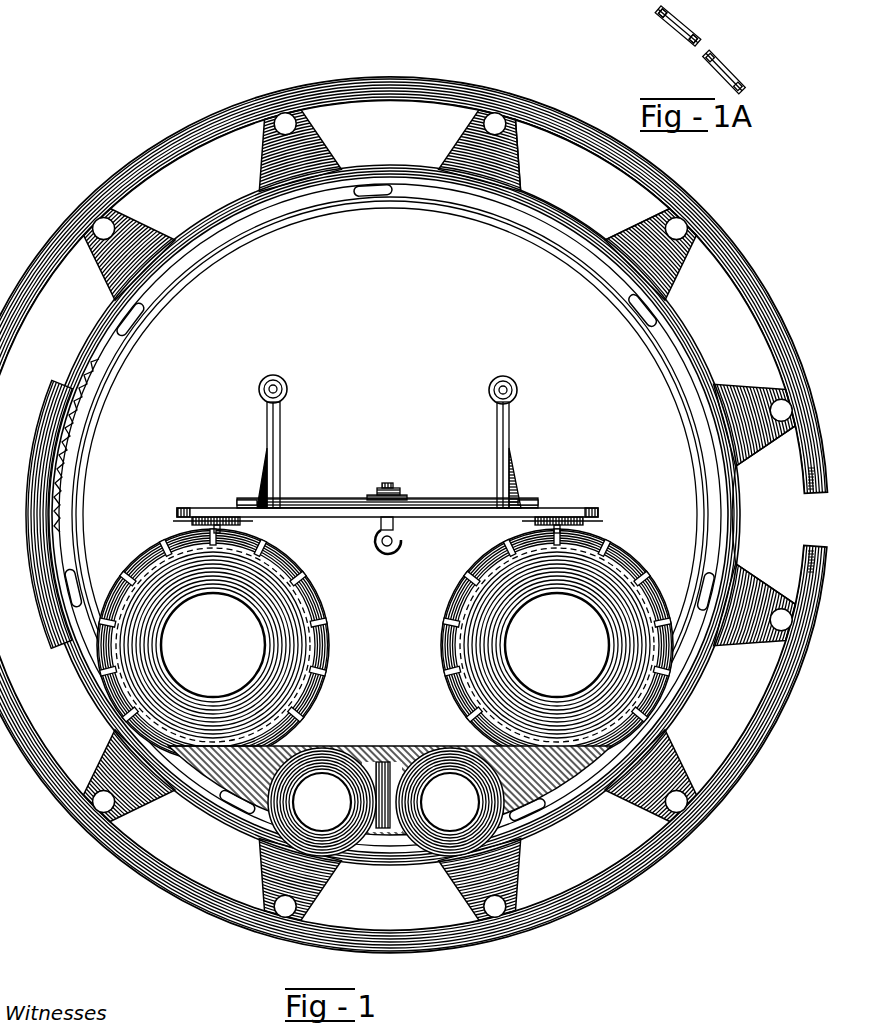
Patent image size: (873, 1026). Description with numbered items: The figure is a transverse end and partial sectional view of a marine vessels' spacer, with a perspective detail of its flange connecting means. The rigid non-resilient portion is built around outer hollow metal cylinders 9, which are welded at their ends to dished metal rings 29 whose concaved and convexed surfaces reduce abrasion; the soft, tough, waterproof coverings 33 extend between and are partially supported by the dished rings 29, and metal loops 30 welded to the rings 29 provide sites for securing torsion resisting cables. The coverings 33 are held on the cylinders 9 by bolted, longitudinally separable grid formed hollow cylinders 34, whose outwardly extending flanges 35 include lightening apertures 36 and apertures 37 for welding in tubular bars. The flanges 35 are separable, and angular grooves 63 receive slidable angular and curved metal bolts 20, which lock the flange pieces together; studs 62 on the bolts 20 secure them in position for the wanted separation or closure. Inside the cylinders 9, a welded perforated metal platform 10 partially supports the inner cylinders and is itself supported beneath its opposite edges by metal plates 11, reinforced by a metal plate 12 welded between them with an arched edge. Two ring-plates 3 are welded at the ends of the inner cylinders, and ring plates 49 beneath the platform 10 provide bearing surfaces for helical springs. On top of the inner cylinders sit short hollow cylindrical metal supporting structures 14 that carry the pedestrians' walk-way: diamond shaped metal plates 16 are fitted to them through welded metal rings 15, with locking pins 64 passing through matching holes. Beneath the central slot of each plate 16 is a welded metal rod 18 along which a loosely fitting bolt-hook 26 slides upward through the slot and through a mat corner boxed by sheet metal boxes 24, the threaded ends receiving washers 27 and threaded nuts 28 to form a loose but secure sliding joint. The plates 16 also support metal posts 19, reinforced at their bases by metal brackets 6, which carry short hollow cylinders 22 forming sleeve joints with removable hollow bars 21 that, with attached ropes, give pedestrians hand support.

In FIG. 1, the ring-plates 3 is at (605, 565).
In FIG. 1, the metal brackets 6 is at (258, 486).
In FIG. 1, the hollow metal cylinders 9 is at (442, 206).
In FIG. 1, the perforated metal platform 10 is at (357, 748).
In FIG. 1, the metal plates 11 is at (220, 790).
In FIG. 1, the metal plate 12 is at (385, 758).
In FIG. 1, the short hollow cylindrical metal supporting structures 14 is at (537, 523).
In FIG. 1, the metal rings 15 is at (192, 522).
In FIG. 1, the diamond shaped metal plates 16 is at (553, 510).
In FIG. 1, the metal rod 18 is at (379, 522).
In FIG. 1, the metal posts 19 is at (282, 408).
In FIG. 1A, the angular and curved metal bolts 20 is at (686, 30).
In FIG. 1, the hollow bars 21 is at (512, 382).
In FIG. 1, the short hollow cylinders 22 is at (281, 380).
In FIG. 1, the sheet metal boxes 24 is at (438, 500).
In FIG. 1, the bolt-hook 26 is at (388, 484).
In FIG. 1, the washers 27 is at (372, 495).
In FIG. 1, the threaded nuts 28 is at (400, 493).
In FIG. 1, the dished metal rings 29 is at (130, 334).
In FIG. 1, the metal loops 30 is at (378, 197).
In FIG. 1, the coverings 33 is at (95, 357).
In FIG. 1, the grid formed hollow cylinders 34 is at (552, 214).
In FIG. 1, the flanges 35 is at (698, 210).
In FIG. 1, the lightening apertures 36 is at (727, 292).
In FIG. 1, the apertures 37 is at (690, 231).
In FIG. 1, the ring plates 49 is at (345, 848).
In FIG. 1, the studs 62 is at (812, 462).
In FIG. 1A, the studs 62 is at (690, 38).
In FIG. 1, the angular grooves 63 is at (825, 545).
In FIG. 1, the locking pins 64 is at (178, 512).